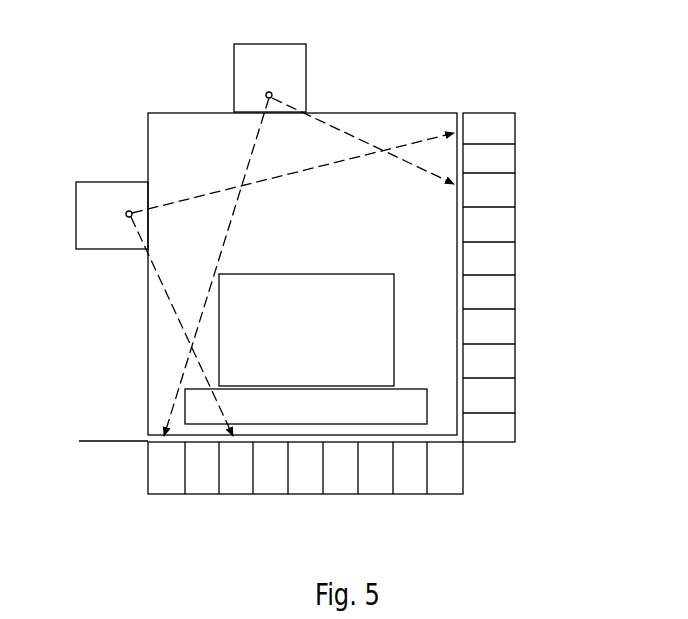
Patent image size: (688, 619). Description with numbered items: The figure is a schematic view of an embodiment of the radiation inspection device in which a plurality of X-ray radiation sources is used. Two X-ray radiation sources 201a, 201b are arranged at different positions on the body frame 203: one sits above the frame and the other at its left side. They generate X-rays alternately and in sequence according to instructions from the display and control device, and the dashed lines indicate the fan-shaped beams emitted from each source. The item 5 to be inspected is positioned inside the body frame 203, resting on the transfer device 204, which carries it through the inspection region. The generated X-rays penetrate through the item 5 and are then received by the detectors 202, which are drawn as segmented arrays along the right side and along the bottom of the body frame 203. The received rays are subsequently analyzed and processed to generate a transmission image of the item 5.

The item to be inspected 5 is at (306, 330).
The X-ray radiation source 201a is at (301, 72).
The X-ray radiation source 201b is at (96, 232).
The detector 202 is at (503, 255).
The body frame 203 is at (146, 315).
The transfer device 204 is at (306, 407).